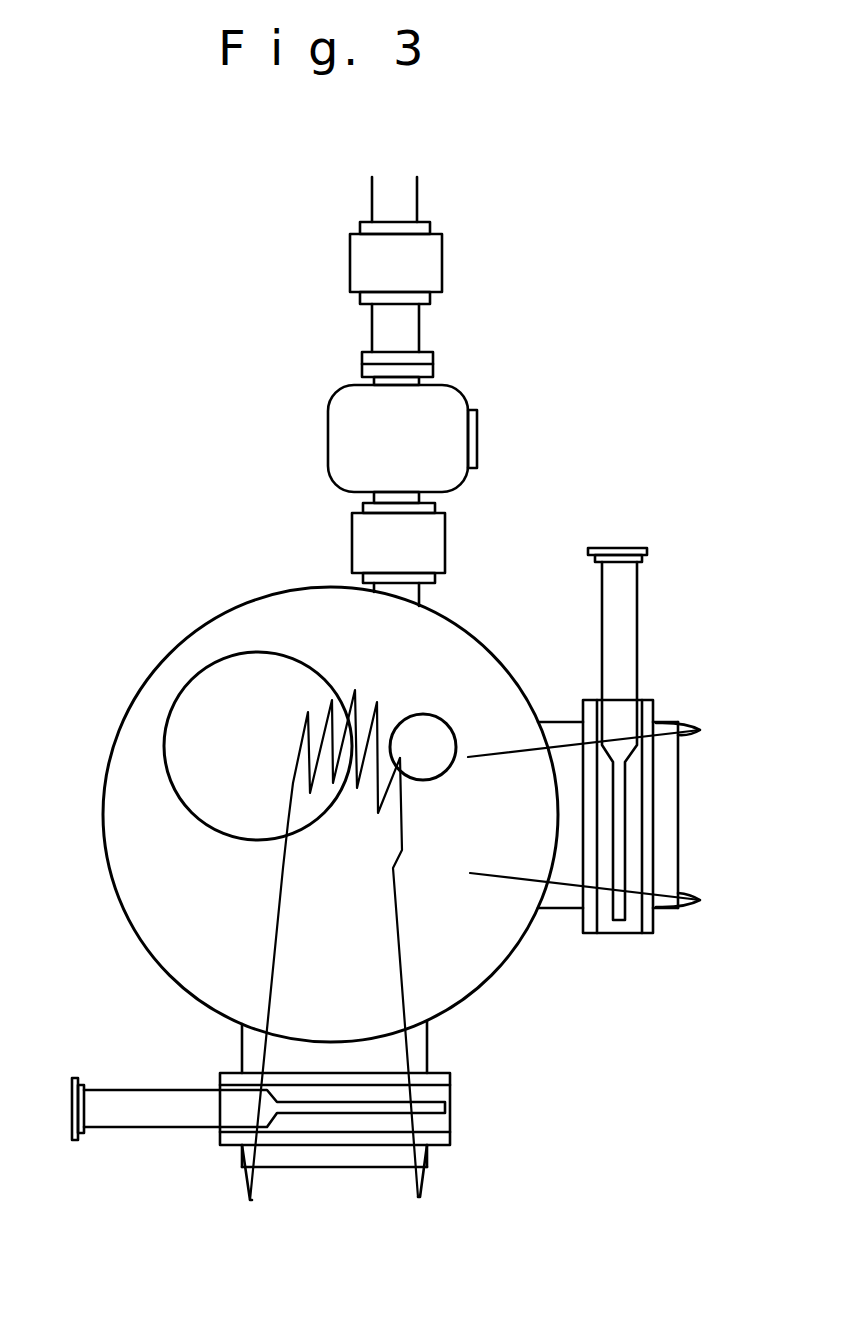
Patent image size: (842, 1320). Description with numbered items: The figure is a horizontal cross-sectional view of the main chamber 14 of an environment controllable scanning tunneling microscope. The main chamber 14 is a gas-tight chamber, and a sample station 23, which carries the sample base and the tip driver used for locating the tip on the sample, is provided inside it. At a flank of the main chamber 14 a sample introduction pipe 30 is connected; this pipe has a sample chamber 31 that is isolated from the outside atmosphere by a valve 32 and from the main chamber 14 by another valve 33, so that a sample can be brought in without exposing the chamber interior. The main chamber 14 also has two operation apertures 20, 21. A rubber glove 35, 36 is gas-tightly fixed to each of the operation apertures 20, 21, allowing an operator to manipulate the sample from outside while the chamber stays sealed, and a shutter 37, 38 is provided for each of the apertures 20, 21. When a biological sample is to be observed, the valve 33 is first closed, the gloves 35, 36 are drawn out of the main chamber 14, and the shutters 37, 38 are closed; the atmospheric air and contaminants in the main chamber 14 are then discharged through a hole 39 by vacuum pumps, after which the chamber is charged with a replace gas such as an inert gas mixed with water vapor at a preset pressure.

The main chamber 14 is at (222, 630).
The operation aperture 20 is at (345, 1170).
The operation aperture 21 is at (678, 807).
The sample station 23 is at (168, 746).
The sample introduction pipe 30 is at (380, 201).
The sample chamber 31 is at (445, 441).
The valve 32 is at (425, 263).
The valve 33 is at (425, 540).
The rubber glove 35 is at (278, 934).
The rubber glove 36 is at (507, 880).
The shutter 37 is at (158, 1120).
The shutter 38 is at (630, 650).
The hole 39 is at (428, 723).